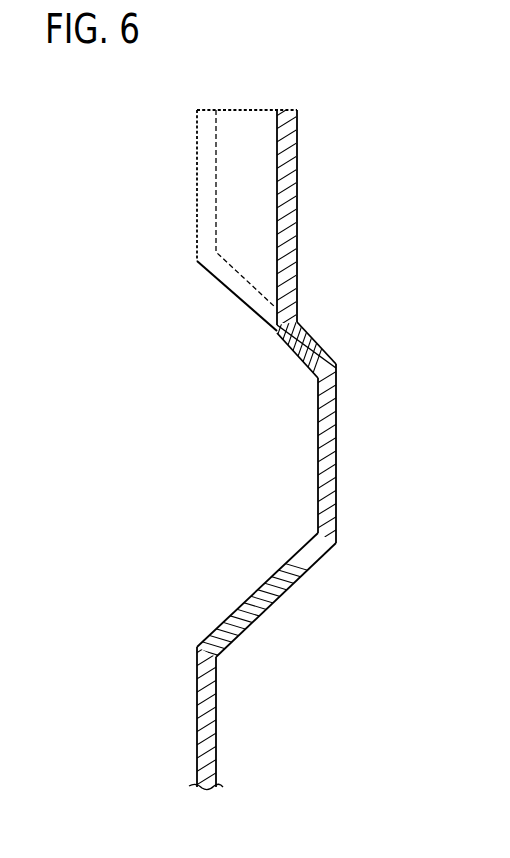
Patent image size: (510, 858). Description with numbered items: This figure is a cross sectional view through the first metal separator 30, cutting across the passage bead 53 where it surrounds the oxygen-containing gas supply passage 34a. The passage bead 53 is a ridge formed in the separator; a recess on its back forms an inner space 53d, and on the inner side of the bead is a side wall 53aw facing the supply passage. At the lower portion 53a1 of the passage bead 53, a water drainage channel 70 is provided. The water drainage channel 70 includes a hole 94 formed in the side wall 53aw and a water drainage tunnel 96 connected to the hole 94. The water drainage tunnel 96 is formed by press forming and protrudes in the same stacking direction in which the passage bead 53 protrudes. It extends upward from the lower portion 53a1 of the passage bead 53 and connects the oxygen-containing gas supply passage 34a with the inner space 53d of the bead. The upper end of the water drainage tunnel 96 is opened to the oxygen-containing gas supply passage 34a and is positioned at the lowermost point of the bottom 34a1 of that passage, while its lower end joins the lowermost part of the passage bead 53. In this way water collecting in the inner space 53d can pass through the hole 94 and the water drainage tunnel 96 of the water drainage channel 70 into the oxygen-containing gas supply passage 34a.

The bottom of the oxygen-containing gas supply passage 34a1 is at (240, 109).
The oxygen-containing gas supply passage 34a is at (266, 105).
The water drainage tunnel 96 is at (298, 138).
The water drainage channel 70 is at (302, 188).
The hole 94 is at (240, 301).
The side wall 53aw is at (319, 346).
The inner space 53d is at (285, 410).
The passage bead 53 is at (316, 505).
The lower portion of the passage bead 53a1 is at (330, 506).
The first metal separator 30 is at (252, 697).